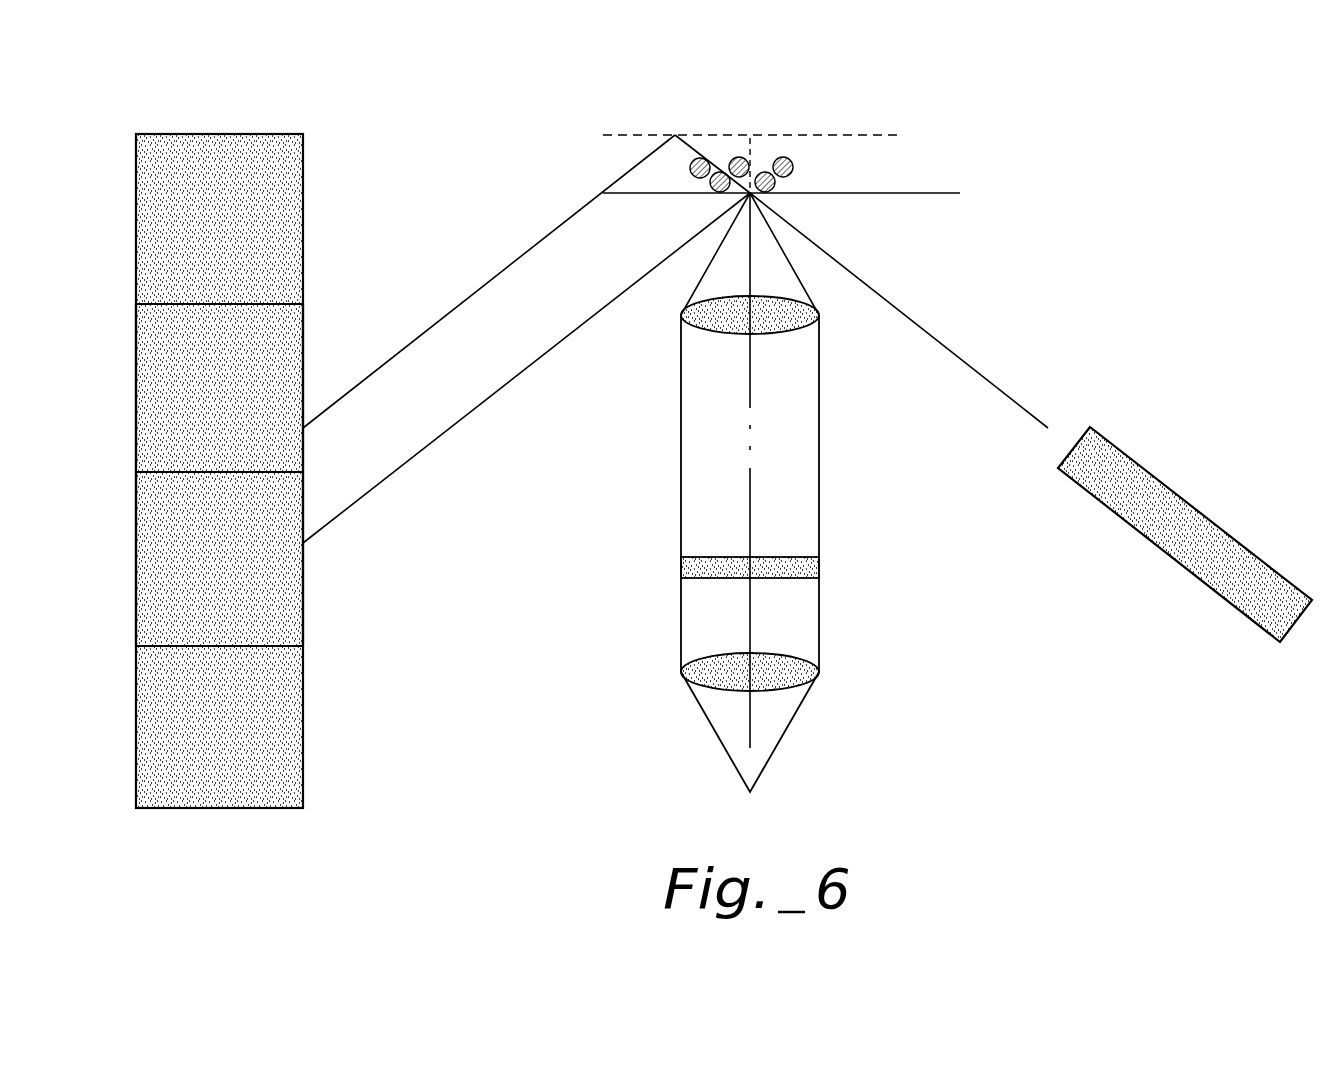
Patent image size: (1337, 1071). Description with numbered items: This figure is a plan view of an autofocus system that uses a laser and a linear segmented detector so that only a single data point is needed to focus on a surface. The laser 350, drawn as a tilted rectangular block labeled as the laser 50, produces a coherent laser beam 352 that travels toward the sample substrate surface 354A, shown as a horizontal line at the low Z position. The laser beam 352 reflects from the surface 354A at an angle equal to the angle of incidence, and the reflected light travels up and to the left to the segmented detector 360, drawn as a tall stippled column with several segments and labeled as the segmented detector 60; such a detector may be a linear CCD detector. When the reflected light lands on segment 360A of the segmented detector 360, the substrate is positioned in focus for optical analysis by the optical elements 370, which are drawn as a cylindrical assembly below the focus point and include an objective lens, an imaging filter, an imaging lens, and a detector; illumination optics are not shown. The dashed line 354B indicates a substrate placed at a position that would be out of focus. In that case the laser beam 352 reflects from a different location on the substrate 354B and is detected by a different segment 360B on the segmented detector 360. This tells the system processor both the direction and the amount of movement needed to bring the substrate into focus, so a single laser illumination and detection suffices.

The segmented detector 60 is at (257, 416).
The segmented detector 360 is at (257, 447).
The segment 360A is at (303, 600).
The segment 360B is at (303, 361).
The sample substrate surface 354A is at (912, 193).
The substrate at out-of-focus position 354B is at (855, 135).
The laser beam 352 is at (912, 321).
The laser 350 is at (1202, 510).
The laser 50 is at (1185, 540).
The optical elements 370 is at (668, 310).